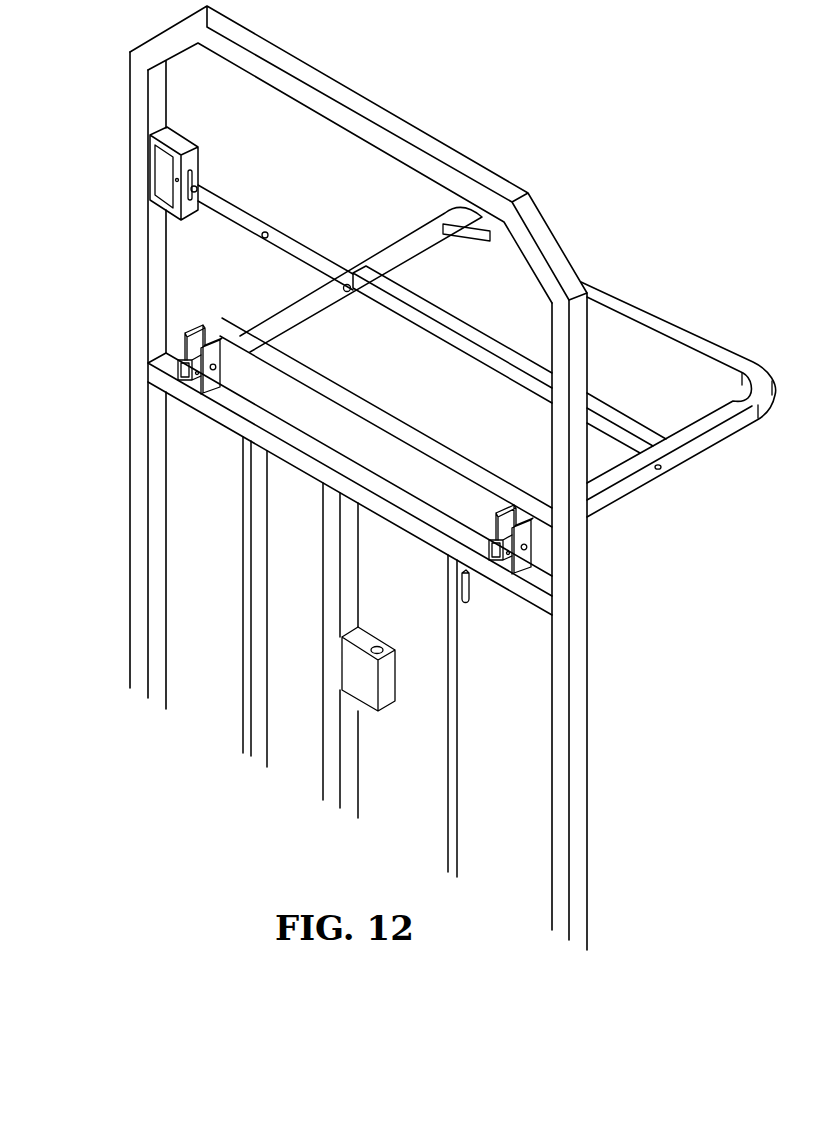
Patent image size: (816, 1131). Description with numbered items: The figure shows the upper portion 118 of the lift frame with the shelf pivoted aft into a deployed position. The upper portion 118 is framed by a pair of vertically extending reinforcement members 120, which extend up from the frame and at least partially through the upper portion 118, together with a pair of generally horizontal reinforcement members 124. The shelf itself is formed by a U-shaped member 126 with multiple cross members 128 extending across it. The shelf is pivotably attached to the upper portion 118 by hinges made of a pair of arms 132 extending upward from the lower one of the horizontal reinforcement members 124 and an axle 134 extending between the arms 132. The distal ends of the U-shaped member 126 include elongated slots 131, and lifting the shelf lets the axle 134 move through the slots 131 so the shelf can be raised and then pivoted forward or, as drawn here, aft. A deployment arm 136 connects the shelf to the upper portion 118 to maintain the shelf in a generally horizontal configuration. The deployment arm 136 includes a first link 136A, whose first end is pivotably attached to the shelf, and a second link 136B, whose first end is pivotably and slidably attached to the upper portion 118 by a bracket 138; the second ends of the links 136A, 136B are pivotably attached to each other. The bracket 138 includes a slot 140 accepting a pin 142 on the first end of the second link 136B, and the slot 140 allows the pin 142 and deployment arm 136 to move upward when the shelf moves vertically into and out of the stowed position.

The upper portion 118 is at (102, 354).
The vertically extending reinforcement member 120 is at (136, 434).
The generally horizontal reinforcement member 124 is at (388, 105).
The U-shaped member 126 is at (660, 310).
The cross member 128 is at (493, 358).
The elongated slot 131 is at (186, 384).
The arm 132 is at (497, 543).
The axle 134 is at (218, 368).
The deployment arm 136 is at (280, 200).
The first link 136A is at (307, 250).
The second link 136B is at (232, 215).
The bracket 138 is at (178, 135).
The slot 140 is at (199, 172).
The pin 142 is at (199, 190).